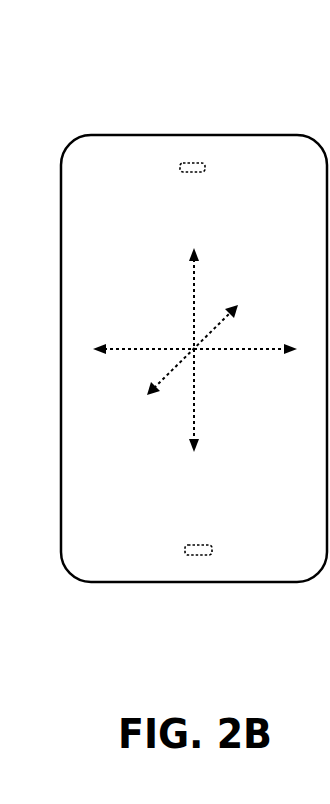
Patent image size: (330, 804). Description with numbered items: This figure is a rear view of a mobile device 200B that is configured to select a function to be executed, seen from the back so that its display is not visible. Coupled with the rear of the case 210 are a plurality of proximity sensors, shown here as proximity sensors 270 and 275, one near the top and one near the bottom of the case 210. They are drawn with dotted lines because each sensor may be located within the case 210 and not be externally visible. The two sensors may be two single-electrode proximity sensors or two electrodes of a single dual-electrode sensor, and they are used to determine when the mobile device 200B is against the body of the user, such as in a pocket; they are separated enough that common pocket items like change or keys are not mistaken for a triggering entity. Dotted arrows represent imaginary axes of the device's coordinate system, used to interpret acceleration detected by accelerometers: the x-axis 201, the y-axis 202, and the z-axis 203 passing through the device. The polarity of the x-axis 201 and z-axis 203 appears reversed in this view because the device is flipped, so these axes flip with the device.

The mobile device 200B is at (73, 98).
The case 210 is at (61, 448).
The proximity sensor 270 is at (180, 169).
The proximity sensor 275 is at (186, 550).
The x-axis 201 is at (148, 349).
The y-axis 202 is at (194, 271).
The z-axis 203 is at (224, 320).